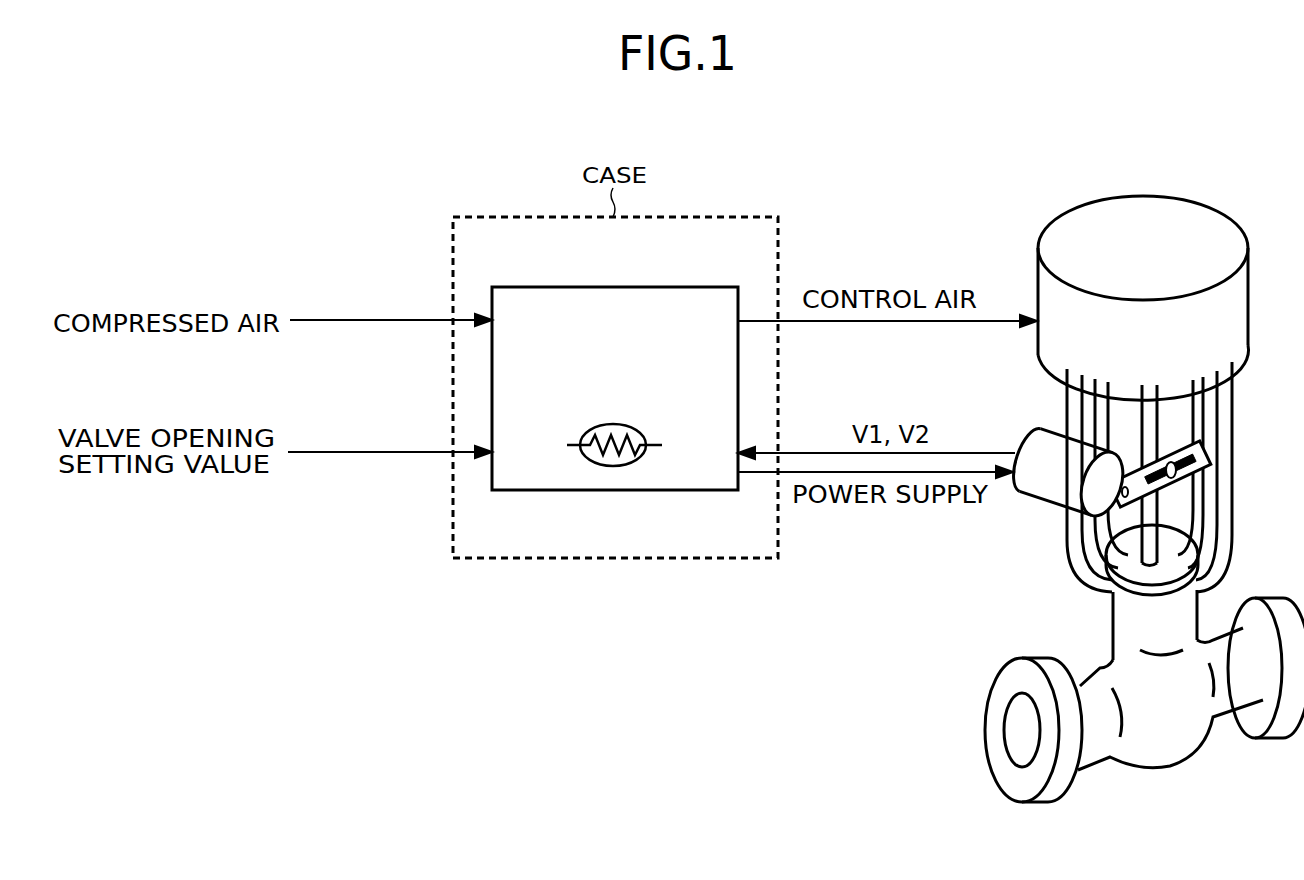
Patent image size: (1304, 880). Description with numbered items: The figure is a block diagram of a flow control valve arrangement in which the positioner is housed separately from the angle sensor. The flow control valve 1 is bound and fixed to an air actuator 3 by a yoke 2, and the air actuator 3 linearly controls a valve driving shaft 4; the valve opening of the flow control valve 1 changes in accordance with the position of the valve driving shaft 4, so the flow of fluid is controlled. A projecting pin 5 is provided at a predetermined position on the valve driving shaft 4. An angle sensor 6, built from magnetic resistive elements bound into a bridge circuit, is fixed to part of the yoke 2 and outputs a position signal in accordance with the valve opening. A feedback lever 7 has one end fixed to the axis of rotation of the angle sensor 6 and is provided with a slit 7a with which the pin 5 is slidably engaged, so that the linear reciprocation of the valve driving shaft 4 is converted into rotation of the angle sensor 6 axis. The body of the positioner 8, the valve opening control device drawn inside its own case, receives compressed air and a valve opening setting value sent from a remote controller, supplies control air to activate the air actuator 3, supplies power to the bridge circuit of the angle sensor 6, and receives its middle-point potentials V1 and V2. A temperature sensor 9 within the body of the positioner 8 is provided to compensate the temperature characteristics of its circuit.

The flow control valve 1 is at (1173, 743).
The yoke 2 is at (1230, 378).
The air actuator 3 is at (1250, 290).
The valve driving shaft 4 is at (1157, 410).
The projecting pin 5 is at (1208, 472).
The angle sensor 6 is at (1043, 500).
The feedback lever 7 is at (1188, 430).
The slit 7a is at (1176, 513).
The body of the positioner 8 is at (613, 287).
The temperature sensor 9 is at (613, 467).